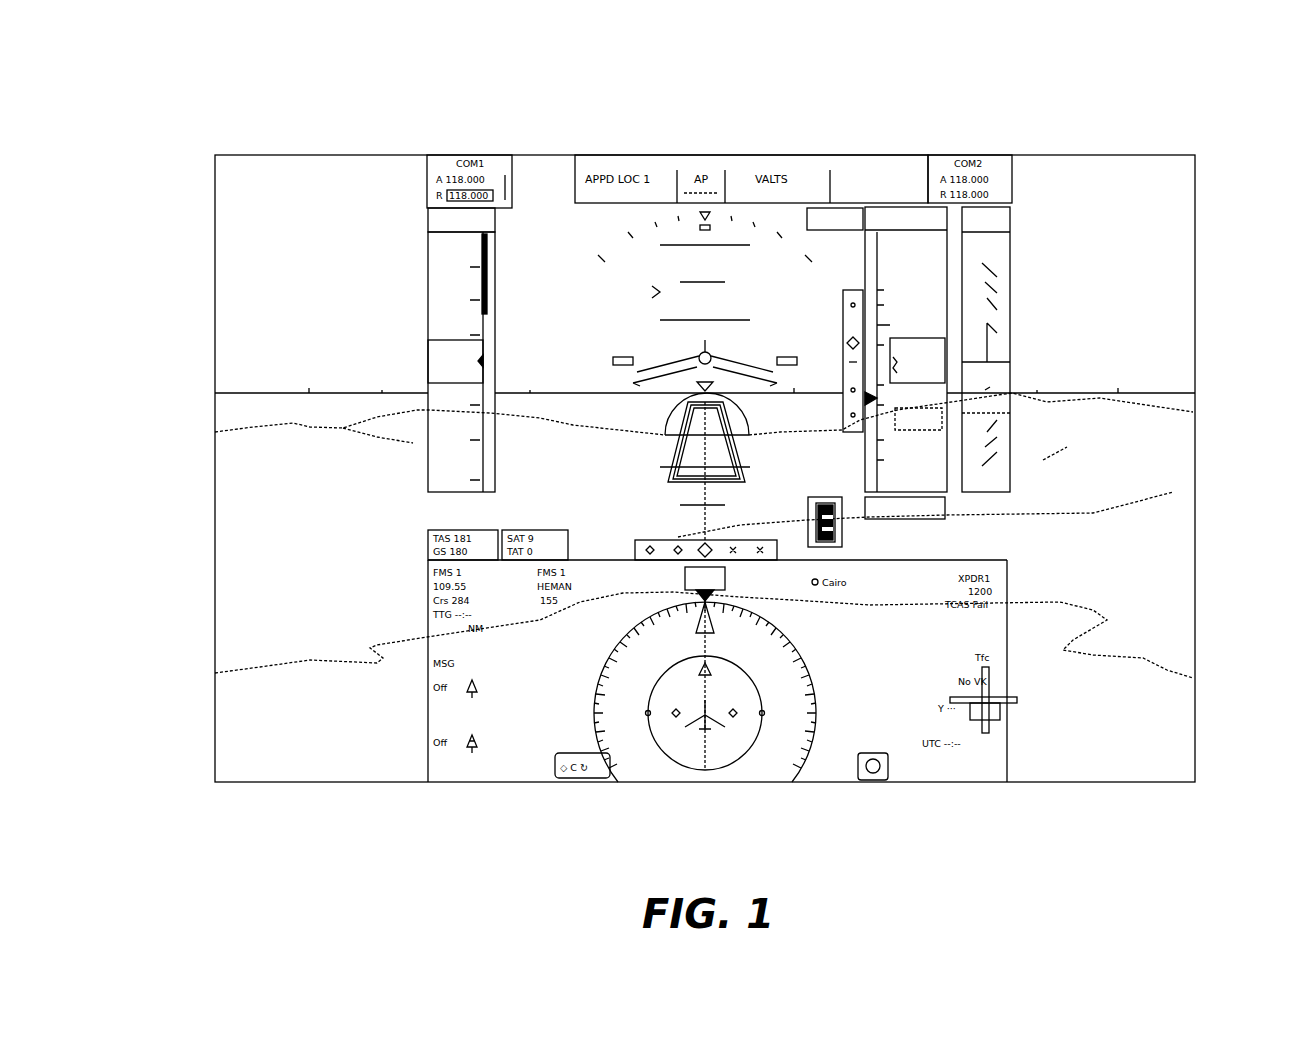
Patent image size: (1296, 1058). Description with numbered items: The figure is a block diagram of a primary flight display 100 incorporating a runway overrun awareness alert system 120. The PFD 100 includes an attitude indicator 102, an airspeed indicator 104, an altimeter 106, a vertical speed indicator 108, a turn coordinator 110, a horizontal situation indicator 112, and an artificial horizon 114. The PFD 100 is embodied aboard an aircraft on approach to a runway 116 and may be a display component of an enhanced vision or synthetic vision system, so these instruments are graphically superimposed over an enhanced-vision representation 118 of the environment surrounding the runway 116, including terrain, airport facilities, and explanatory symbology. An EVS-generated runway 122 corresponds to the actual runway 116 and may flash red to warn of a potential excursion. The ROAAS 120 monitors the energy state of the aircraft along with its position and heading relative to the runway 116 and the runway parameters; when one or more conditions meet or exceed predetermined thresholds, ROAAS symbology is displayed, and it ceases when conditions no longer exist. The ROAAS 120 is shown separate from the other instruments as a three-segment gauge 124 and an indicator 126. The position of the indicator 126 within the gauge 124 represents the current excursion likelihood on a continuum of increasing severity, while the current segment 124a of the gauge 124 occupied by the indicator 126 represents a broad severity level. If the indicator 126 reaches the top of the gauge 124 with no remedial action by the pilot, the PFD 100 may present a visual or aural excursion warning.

The primary flight display 100 is at (156, 110).
The attitude indicator 102 is at (632, 265).
The airspeed indicator 104 is at (440, 345).
The altimeter 106 is at (920, 303).
The vertical speed indicator 108 is at (995, 343).
The turn coordinator 110 is at (703, 593).
The horizontal situation indicator 112 is at (768, 668).
The artificial horizon 114 is at (1076, 393).
The runway 116 is at (690, 403).
The enhanced-vision representation 118 is at (245, 419).
The runway overrun awareness alert system 120 is at (842, 523).
The EVS-generated runway 122 is at (731, 403).
The three-segment gauge 124 is at (827, 537).
The segment 124a is at (845, 545).
The indicator 126 is at (838, 520).